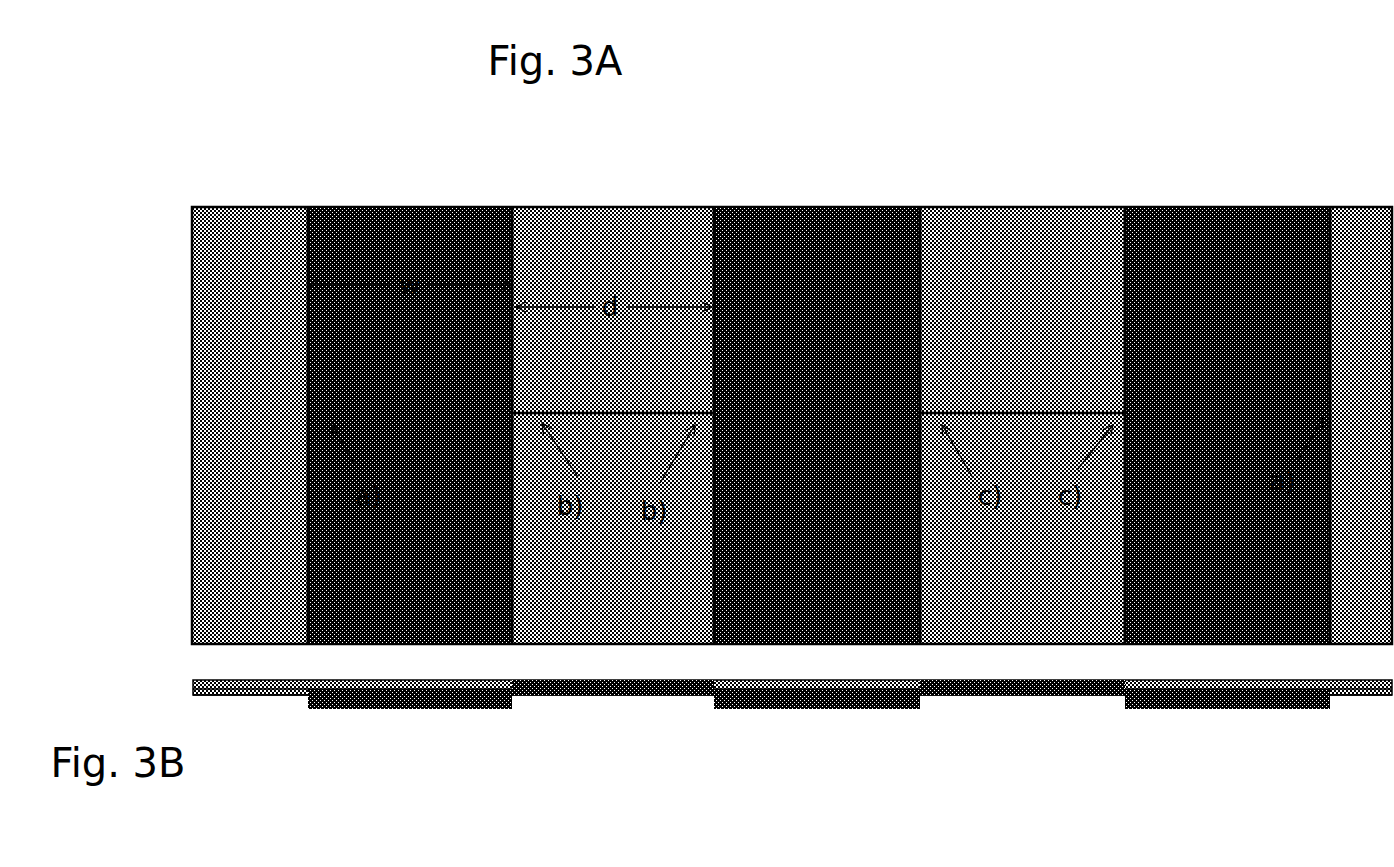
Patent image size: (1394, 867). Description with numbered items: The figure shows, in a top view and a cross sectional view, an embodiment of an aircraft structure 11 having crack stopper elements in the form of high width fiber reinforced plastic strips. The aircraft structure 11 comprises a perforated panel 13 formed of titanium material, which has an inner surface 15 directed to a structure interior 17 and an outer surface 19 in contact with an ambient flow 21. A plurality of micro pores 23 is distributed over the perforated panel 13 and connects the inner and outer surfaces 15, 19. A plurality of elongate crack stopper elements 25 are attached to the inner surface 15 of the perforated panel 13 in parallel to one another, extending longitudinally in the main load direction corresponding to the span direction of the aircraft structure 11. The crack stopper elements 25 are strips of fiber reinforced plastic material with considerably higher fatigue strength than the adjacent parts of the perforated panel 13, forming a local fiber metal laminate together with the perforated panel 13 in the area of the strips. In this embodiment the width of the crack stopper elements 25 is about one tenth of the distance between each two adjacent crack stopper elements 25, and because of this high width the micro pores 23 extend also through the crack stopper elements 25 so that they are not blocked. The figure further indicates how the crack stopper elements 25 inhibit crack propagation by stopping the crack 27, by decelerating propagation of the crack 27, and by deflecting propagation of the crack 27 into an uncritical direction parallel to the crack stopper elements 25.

In FIG. 3A, the aircraft structure 11 is at (215, 124).
In FIG. 3A, the perforated panel 13 is at (258, 428).
In FIG. 3B, the inner surface 15 is at (262, 698).
In FIG. 3B, the structure interior 17 is at (277, 750).
In FIG. 3B, the outer surface 19 is at (235, 685).
In FIG. 3B, the ambient flow 21 is at (184, 663).
In FIG. 3A, the micro pores 23 is at (1004, 214).
In FIG. 3B, the micro pores 23 is at (862, 669).
In FIG. 3A, the crack stopper elements 25 is at (386, 560).
In FIG. 3B, the crack stopper elements 25 is at (447, 708).
In FIG. 3A, the crack 27 is at (612, 411).
In FIG. 3B, the crack 27 is at (597, 698).